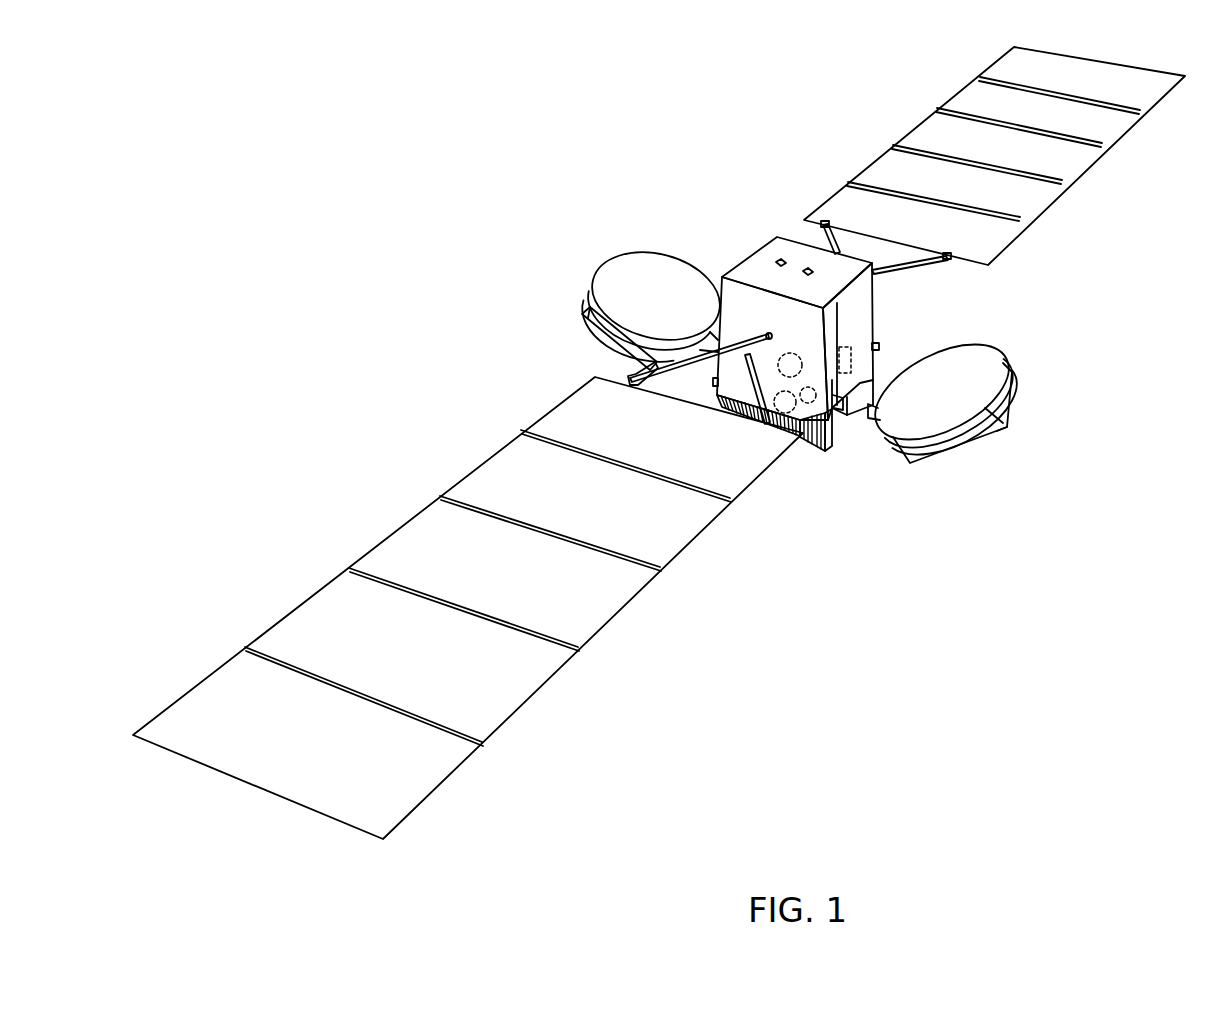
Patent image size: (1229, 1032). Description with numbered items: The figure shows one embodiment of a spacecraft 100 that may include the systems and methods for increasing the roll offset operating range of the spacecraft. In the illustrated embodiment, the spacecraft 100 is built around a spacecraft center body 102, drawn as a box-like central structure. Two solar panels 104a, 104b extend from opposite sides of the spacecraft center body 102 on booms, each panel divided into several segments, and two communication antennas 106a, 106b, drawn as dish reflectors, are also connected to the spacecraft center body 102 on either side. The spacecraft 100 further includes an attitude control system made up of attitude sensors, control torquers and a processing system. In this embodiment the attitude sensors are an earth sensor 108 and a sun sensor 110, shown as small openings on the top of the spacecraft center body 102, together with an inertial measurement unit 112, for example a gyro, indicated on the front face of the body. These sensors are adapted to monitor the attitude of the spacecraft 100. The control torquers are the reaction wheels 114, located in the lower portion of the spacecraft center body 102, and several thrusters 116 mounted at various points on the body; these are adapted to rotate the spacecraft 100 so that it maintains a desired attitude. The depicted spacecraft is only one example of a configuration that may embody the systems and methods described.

The spacecraft 100 is at (456, 204).
The spacecraft center body 102 is at (740, 265).
The solar panel 104a is at (604, 594).
The solar panel 104b is at (1076, 159).
The communication antenna 106a is at (617, 277).
The communication antenna 106b is at (940, 410).
The earth sensor 108 is at (776, 260).
The sun sensor 110 is at (814, 273).
The inertial measurement unit 112 is at (790, 355).
The reaction wheels 114 is at (815, 453).
The thrusters 116 is at (881, 346).